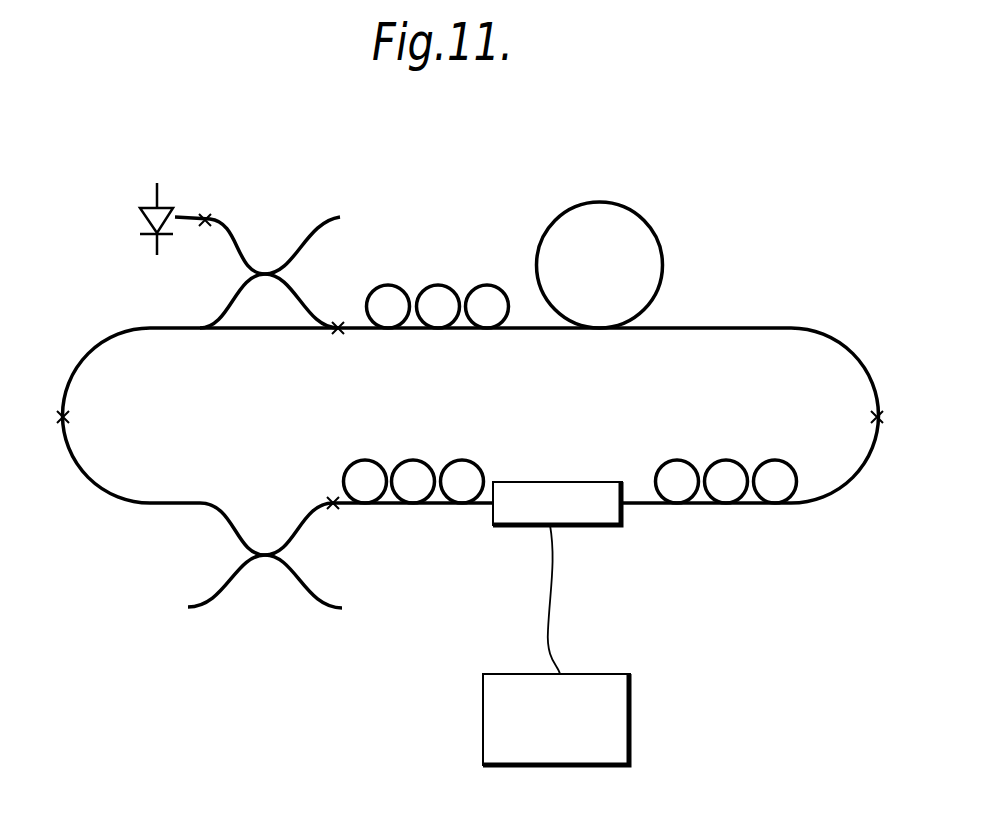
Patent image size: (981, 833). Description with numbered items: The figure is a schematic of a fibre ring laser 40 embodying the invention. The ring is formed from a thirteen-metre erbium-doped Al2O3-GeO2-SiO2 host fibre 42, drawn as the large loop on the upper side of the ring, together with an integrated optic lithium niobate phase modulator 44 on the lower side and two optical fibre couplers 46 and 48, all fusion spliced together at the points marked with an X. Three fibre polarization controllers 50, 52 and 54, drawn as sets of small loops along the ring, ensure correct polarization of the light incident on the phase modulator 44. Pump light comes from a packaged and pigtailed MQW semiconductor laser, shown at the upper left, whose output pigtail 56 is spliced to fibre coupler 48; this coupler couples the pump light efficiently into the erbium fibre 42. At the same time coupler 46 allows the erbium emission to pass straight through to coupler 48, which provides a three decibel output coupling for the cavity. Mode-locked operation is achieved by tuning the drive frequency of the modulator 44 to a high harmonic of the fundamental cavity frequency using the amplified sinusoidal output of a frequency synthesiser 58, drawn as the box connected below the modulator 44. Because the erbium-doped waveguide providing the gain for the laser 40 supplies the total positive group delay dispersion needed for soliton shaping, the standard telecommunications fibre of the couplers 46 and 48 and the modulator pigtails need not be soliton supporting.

The ring laser 40 is at (777, 328).
The host fibre 42 is at (655, 233).
The phase modulator 44 is at (603, 525).
The optical fibre coupler 46 is at (157, 503).
The optical fibre coupler 48 is at (160, 328).
The fibre polarization controller 50 is at (735, 503).
The fibre polarization controller 52 is at (408, 503).
The fibre polarization controller 54 is at (438, 290).
The output pigtail 56 is at (187, 217).
The frequency synthesiser 58 is at (630, 743).